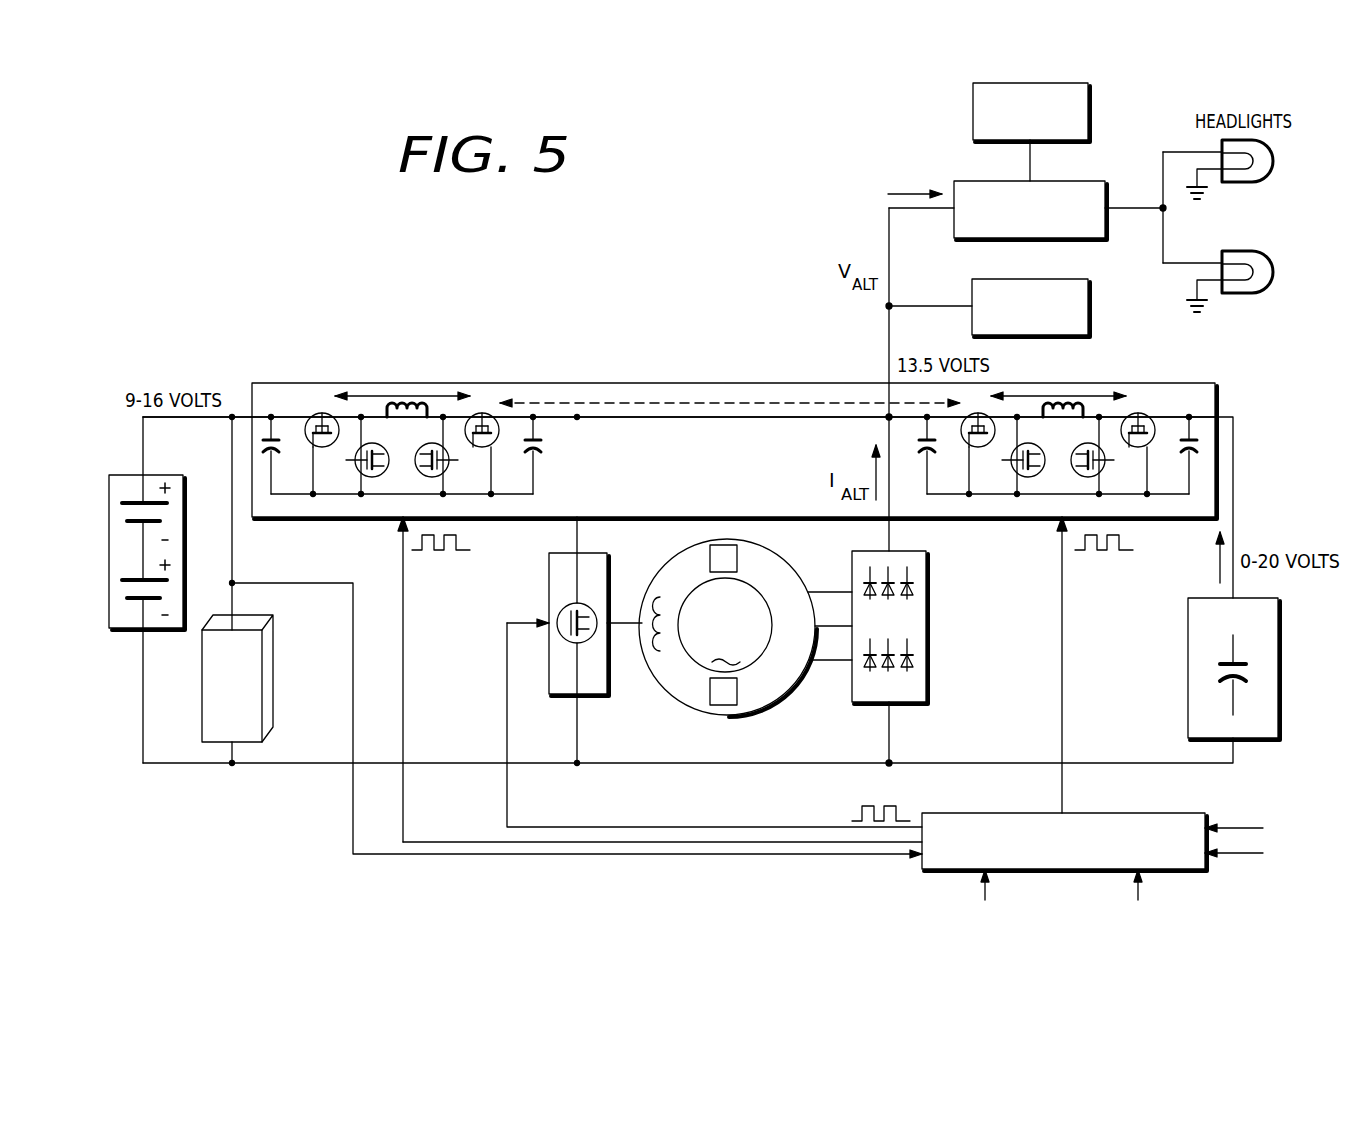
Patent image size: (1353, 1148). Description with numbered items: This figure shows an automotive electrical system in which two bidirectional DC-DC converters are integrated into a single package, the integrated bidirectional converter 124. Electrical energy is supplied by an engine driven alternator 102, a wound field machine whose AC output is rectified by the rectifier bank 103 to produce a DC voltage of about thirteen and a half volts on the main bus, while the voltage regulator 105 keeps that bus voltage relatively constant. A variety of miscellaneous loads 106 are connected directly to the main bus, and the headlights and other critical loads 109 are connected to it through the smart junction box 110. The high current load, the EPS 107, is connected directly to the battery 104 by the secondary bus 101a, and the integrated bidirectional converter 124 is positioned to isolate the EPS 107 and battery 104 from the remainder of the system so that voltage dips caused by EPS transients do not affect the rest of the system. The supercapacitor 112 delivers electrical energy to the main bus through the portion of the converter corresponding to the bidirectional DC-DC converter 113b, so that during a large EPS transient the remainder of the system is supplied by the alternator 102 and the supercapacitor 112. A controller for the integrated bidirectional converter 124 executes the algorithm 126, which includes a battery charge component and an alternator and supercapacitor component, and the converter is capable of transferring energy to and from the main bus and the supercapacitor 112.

The secondary bus 101a is at (188, 419).
The alternator 102 is at (762, 712).
The rectifier bank 103 is at (928, 630).
The battery 104 is at (108, 570).
The voltage regulator 105 is at (587, 696).
The miscellaneous loads 106 is at (1090, 309).
The EPS 107 is at (272, 690).
The other critical loads 109 is at (1062, 84).
The smart junction box 110 is at (977, 180).
The supercapacitor 112 is at (1283, 636).
The bidirectional DC-DC converter 113b is at (1215, 384).
The integrated bidirectional converter 124 is at (417, 383).
The algorithm 126 is at (925, 870).